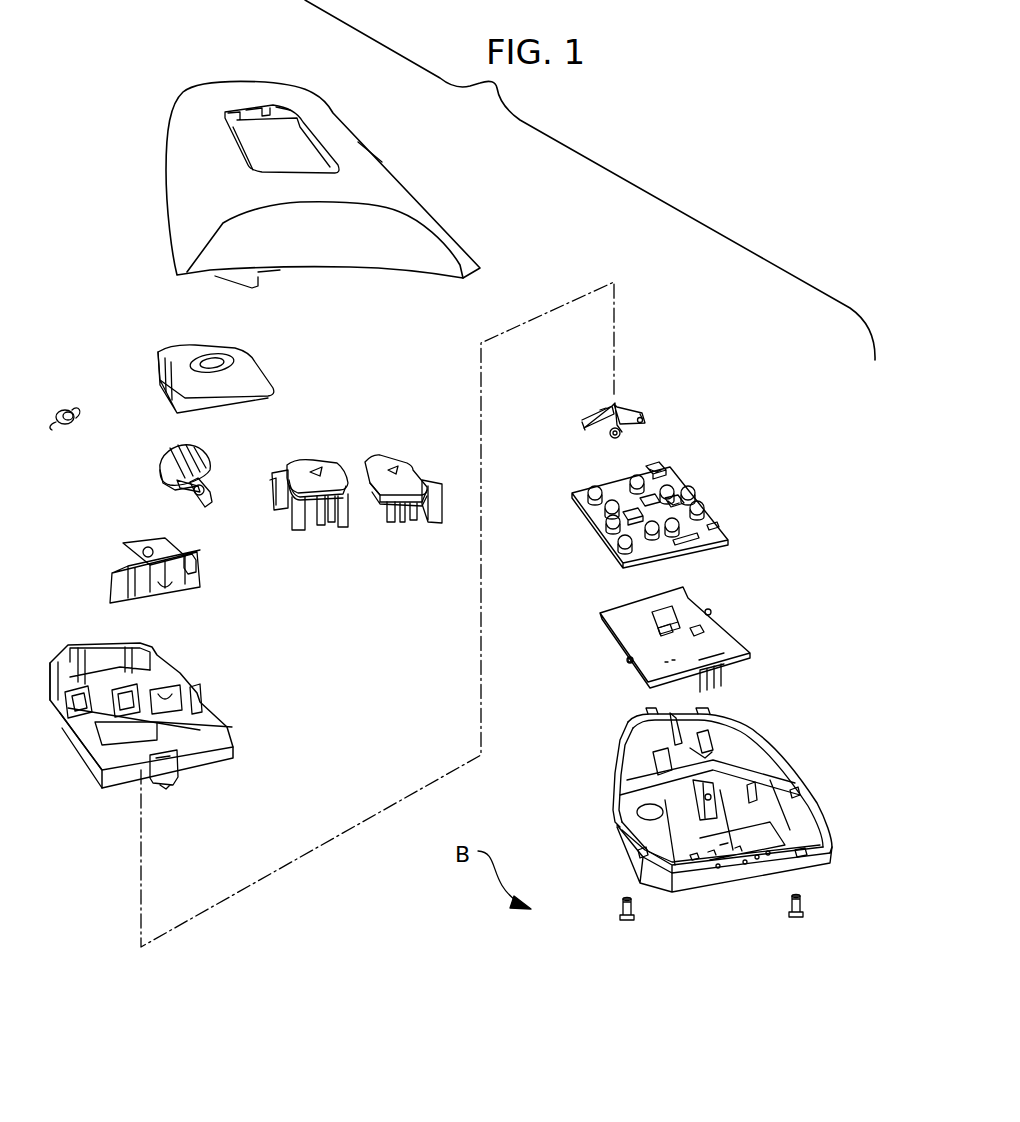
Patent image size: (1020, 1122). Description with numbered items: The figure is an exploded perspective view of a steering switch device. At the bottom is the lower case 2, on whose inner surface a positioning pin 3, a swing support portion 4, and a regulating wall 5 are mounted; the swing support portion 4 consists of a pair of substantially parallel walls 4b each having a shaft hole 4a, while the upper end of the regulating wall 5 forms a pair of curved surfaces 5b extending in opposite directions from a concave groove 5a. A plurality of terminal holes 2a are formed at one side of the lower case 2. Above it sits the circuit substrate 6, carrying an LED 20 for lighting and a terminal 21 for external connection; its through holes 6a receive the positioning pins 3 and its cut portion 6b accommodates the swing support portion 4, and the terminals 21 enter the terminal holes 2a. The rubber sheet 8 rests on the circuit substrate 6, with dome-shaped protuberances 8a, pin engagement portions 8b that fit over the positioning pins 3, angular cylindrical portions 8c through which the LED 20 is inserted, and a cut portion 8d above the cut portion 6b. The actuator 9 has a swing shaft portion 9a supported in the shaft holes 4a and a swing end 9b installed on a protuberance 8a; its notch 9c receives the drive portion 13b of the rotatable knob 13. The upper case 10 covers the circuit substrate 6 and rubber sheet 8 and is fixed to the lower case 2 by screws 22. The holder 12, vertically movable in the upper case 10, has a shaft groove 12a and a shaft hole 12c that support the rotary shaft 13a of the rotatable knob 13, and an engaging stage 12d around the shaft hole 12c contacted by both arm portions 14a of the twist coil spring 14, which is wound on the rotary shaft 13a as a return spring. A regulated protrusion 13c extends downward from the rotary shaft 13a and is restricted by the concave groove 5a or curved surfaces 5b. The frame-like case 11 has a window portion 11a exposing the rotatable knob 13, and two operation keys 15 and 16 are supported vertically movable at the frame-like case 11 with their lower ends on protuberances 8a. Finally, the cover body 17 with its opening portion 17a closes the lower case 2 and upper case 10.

The lower case 2 is at (766, 745).
The terminal holes 2a is at (747, 866).
The positioning pin 3 is at (800, 790).
The swing support portion 4 is at (558, 772).
The shaft hole 4a is at (790, 772).
The walls 4b is at (645, 802).
The regulating wall 5 is at (652, 763).
The concave groove 5a is at (735, 735).
The curved surfaces 5b is at (660, 735).
The circuit substrate 6 is at (722, 606).
The through holes 6a is at (630, 654).
The cut portion 6b is at (652, 610).
The rubber sheet 8 is at (600, 482).
The protuberance 8a is at (698, 490).
The pin engagement portions 8b is at (616, 540).
The angular cylindrical portions 8c is at (700, 516).
The cut portion 8d is at (668, 470).
The actuator 9 is at (632, 408).
The swing shaft portion 9a is at (640, 436).
The swing end 9b is at (650, 420).
The notch 9c is at (608, 410).
The upper case 10 is at (200, 690).
The frame-like case 11 is at (203, 357).
The window portion 11a is at (216, 368).
The holder 12 is at (102, 597).
The shaft groove 12a is at (172, 588).
The shaft hole 12c is at (136, 546).
The engaging stage 12d is at (196, 560).
The rotatable knob 13 is at (168, 455).
The rotary shaft 13a is at (166, 480).
The drive portion 13b is at (206, 500).
The regulated protrusion 13c is at (182, 492).
The twist coil spring 14 is at (70, 408).
The arm portions 14a is at (62, 426).
The operation key 15 is at (412, 457).
The operation key 16 is at (322, 448).
The cover body 17 is at (394, 198).
The opening portion 17a is at (232, 130).
The LED 20 is at (602, 620).
The terminal 21 is at (738, 672).
The screws 22 is at (618, 916).